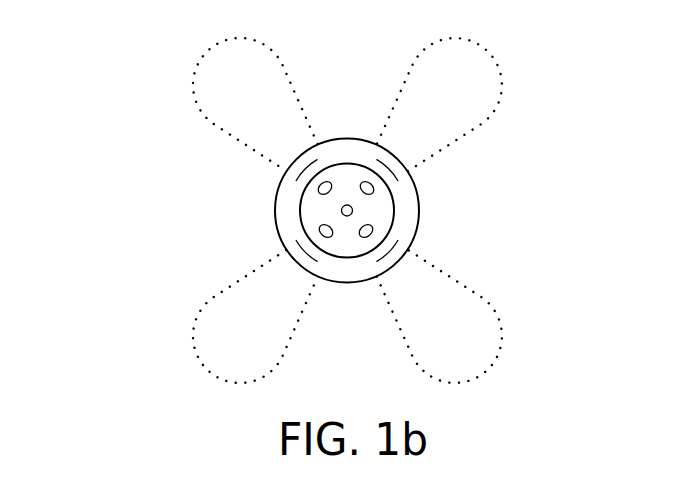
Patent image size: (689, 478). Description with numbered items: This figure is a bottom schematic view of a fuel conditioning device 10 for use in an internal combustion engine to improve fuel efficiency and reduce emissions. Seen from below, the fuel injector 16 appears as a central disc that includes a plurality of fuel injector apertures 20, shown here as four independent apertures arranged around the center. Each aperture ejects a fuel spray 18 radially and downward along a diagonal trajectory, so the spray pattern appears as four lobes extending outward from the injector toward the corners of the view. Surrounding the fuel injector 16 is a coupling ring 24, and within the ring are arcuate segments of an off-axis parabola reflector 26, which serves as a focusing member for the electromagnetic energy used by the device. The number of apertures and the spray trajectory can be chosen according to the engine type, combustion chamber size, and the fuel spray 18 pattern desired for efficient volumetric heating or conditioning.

The fuel conditioning device 10 is at (137, 87).
The fuel injector 16 is at (347, 258).
The fuel spray 18 is at (420, 161).
The fuel injector aperture 20 is at (318, 228).
The coupling ring 24 is at (277, 187).
The off-axis parabola reflector 26 is at (386, 162).